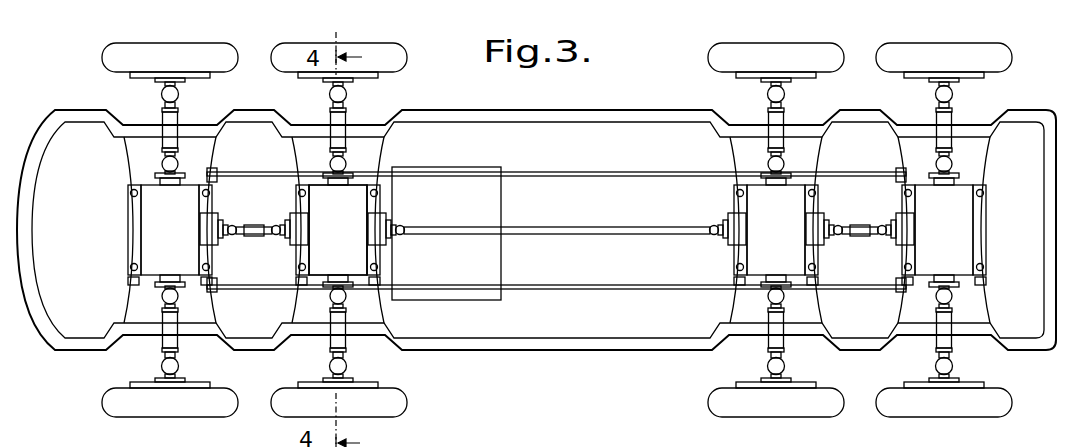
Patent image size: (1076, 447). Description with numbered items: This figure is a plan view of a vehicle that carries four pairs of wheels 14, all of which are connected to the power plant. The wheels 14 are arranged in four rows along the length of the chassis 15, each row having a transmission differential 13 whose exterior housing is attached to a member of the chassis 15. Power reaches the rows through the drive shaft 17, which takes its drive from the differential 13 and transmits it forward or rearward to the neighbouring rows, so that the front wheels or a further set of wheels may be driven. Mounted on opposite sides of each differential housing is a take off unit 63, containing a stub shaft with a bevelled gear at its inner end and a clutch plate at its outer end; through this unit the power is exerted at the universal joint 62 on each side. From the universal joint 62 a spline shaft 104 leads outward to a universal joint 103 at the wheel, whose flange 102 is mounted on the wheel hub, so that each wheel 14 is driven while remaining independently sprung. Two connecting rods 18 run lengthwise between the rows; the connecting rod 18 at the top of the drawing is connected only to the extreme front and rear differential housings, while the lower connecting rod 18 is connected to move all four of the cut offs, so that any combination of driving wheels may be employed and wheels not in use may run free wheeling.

The transmission differential 13 is at (355, 210).
The wheels 14 is at (285, 62).
The chassis 15 is at (615, 110).
The drive shaft 17 is at (258, 228).
The connecting rod 18 is at (523, 172).
The universal joint 62 is at (348, 298).
The take off unit 63 is at (208, 231).
The flange 102 is at (353, 81).
The universal joint 103 is at (161, 95).
The spline shaft 104 is at (343, 118).